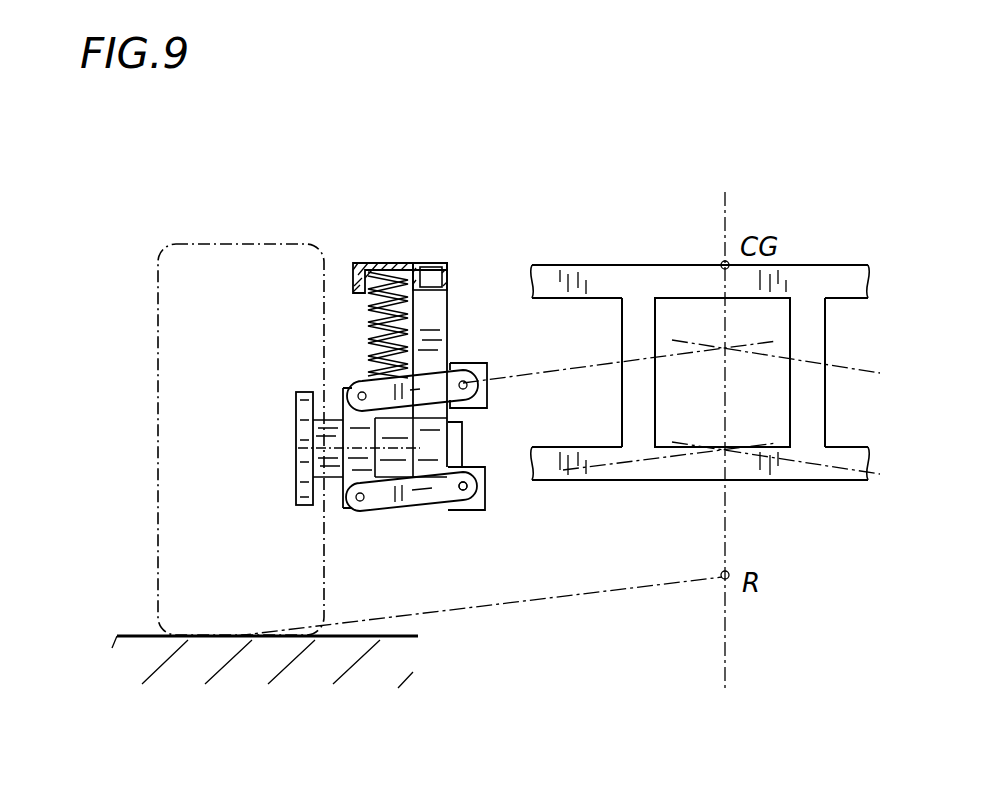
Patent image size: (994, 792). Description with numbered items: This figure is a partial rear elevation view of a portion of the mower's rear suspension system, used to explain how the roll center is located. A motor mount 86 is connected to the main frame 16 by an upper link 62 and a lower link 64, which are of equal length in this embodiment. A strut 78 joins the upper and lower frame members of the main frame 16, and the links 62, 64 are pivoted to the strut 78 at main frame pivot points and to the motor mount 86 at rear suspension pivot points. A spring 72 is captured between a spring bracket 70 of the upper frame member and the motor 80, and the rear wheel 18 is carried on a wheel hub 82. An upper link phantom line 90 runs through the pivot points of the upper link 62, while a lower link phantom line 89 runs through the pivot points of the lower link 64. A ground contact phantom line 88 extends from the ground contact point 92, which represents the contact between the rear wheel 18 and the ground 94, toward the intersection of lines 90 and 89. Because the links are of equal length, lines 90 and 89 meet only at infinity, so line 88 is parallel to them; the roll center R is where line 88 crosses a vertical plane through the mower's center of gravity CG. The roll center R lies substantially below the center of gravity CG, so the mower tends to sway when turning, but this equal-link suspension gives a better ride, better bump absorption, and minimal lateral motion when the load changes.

The main frame 16 is at (673, 249).
The rear wheel 18 is at (223, 243).
The upper link 62 is at (466, 397).
The lower link 64 is at (403, 506).
The spring bracket 70 is at (374, 263).
The spring 72 is at (391, 264).
The strut 78 is at (443, 322).
The motor 80 is at (457, 447).
The wheel hub 82 is at (297, 441).
The motor mount 86 is at (342, 386).
The ground contact phantom line 88 is at (597, 592).
The lower link phantom line 89 is at (653, 480).
The upper link phantom line 90 is at (638, 362).
The ground contact point 92 is at (220, 640).
The ground 94 is at (118, 636).